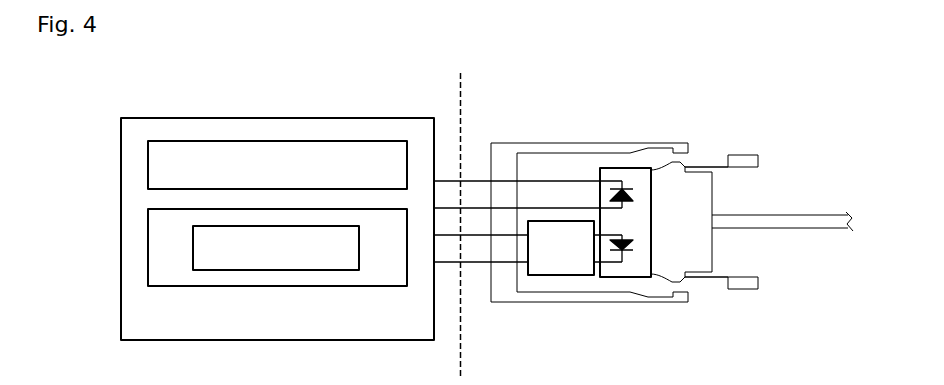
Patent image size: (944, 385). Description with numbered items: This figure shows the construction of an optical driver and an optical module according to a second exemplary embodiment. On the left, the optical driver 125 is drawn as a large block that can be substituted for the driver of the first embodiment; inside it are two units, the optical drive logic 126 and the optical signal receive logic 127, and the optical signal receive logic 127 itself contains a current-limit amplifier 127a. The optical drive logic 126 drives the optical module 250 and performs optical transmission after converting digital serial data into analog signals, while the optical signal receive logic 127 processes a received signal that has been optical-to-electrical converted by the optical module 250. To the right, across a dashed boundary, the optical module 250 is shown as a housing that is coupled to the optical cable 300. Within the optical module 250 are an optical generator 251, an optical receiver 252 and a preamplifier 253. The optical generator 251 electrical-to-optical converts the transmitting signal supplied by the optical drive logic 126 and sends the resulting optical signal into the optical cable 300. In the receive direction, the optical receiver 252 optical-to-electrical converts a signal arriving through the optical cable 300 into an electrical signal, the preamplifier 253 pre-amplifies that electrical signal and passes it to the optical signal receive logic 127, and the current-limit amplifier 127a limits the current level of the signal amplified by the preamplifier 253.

The optical driver 125 is at (121, 186).
The optical drive logic 126 is at (272, 141).
The optical signal receive logic 127 is at (220, 286).
The current-limit amplifier 127a is at (318, 270).
The optical module 250 is at (521, 143).
The optical generator 251 is at (613, 187).
The optical receiver 252 is at (630, 250).
The preamplifier 253 is at (564, 275).
The optical cable 300 is at (801, 228).